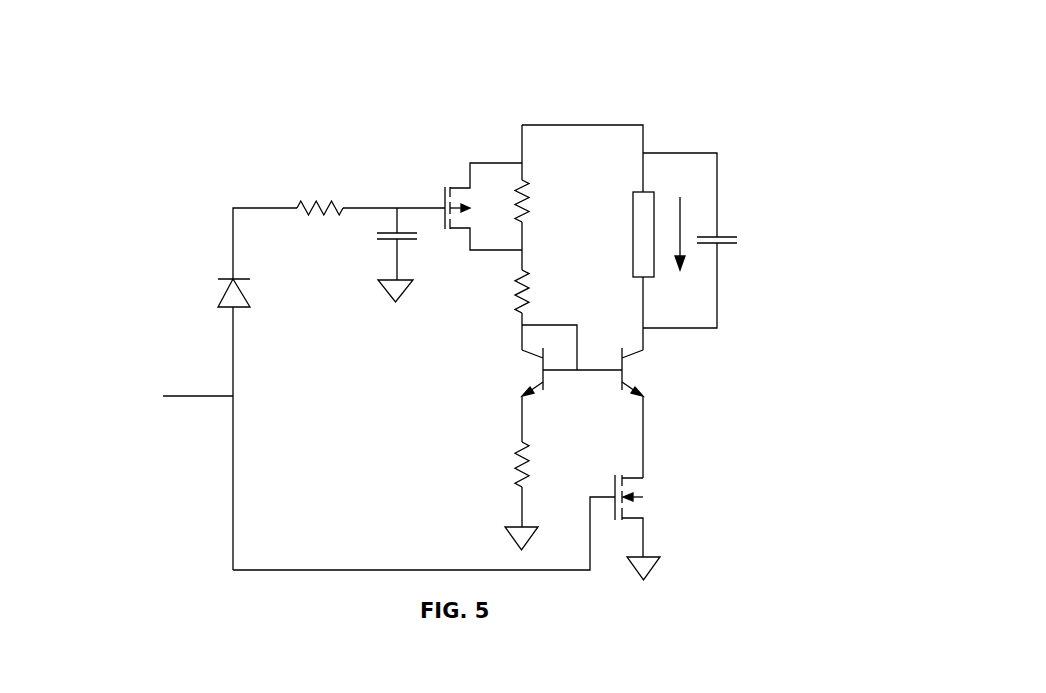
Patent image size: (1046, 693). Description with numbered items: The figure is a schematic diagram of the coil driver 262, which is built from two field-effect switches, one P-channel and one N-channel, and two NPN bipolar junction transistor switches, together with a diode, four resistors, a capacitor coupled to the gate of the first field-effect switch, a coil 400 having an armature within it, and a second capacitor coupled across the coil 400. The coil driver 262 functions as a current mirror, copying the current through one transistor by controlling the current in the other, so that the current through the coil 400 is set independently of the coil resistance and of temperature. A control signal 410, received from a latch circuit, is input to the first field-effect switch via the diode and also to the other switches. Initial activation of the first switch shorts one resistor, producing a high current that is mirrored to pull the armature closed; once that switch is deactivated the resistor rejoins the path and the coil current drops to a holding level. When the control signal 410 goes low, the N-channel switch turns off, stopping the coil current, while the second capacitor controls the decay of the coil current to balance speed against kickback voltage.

The coil driver 262 is at (719, 44).
The coil 400 is at (633, 208).
The control signal 410 is at (187, 394).